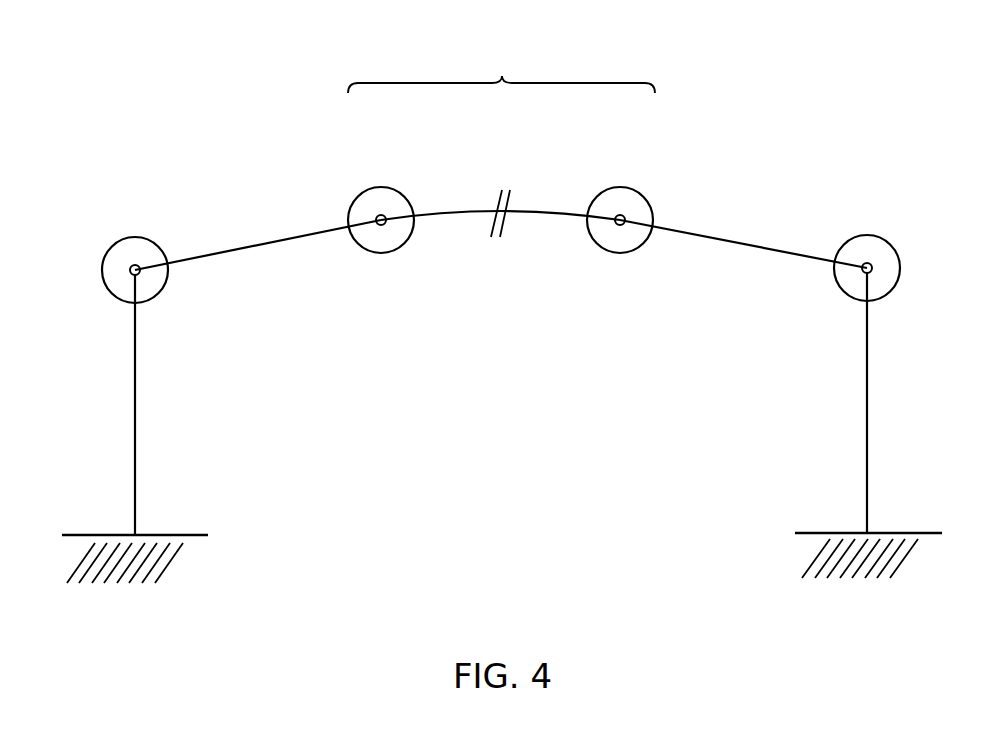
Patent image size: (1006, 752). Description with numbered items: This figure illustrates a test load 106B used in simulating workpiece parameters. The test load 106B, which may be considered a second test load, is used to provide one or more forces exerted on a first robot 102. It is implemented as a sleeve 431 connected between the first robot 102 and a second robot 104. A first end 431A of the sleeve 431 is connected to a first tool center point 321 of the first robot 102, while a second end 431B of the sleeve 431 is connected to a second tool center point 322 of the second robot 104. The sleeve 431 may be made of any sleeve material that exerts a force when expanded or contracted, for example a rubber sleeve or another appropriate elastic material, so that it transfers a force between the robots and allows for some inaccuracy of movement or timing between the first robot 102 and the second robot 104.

The first robot 102 is at (101, 270).
The second robot 104 is at (901, 272).
The test load 106B is at (501, 70).
The first tool center point 321 is at (268, 240).
The second tool center point 322 is at (700, 233).
The sleeve 431 is at (502, 190).
The first end 431A is at (378, 187).
The second end 431B is at (623, 187).